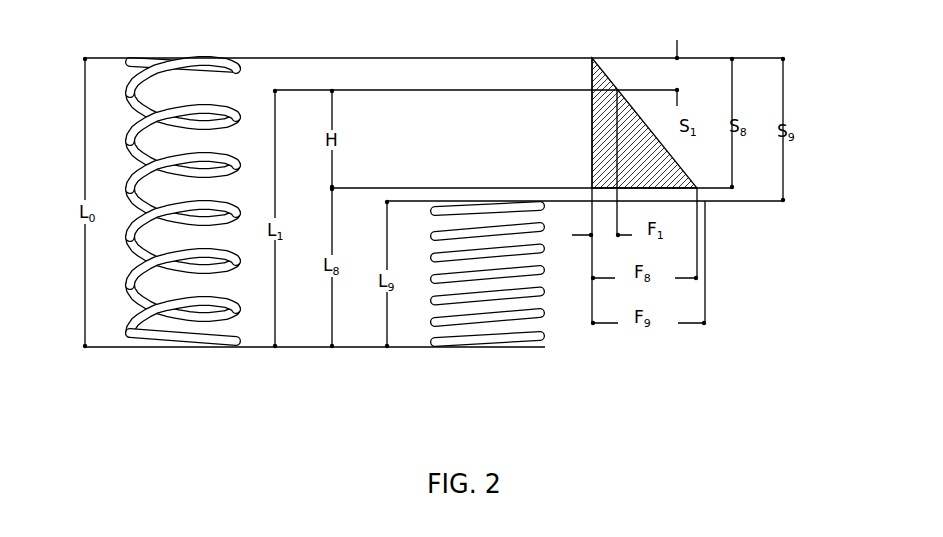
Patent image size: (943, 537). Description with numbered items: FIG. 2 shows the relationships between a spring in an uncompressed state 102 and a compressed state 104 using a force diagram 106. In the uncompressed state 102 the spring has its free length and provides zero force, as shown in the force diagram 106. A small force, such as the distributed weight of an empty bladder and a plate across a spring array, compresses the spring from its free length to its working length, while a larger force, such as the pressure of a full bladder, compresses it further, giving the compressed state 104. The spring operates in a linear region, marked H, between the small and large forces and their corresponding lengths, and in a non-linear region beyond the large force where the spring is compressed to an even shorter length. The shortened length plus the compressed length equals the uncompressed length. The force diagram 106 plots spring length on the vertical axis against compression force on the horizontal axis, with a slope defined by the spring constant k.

The uncompressed state 102 is at (189, 38).
The compressed state 104 is at (490, 380).
The force diagram 106 is at (637, 40).